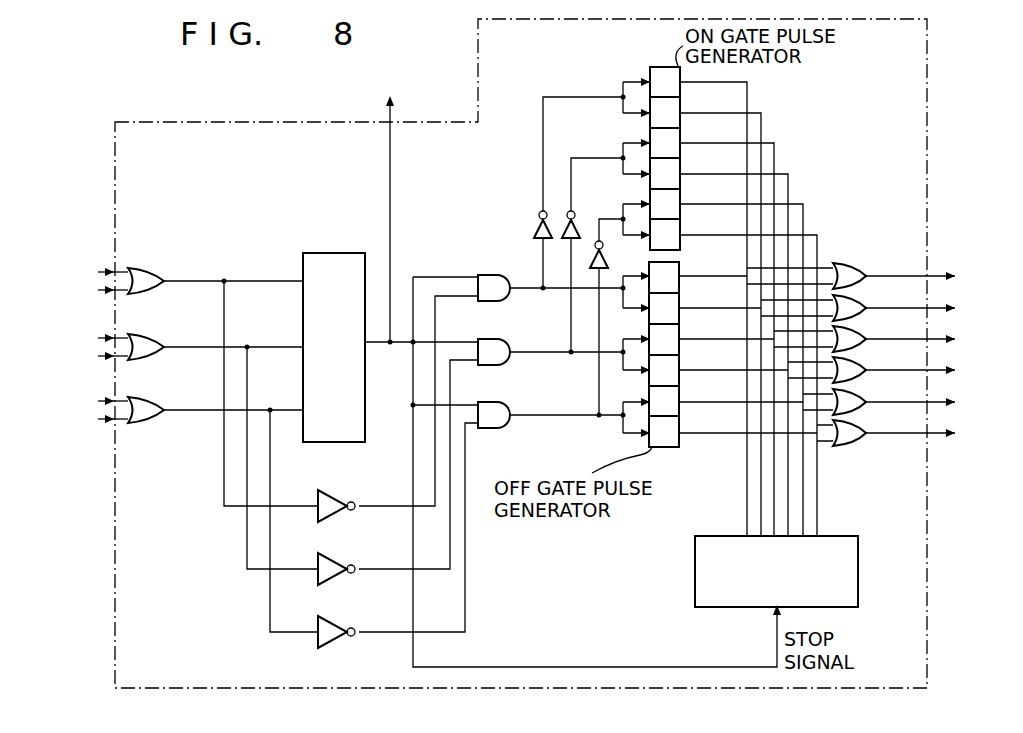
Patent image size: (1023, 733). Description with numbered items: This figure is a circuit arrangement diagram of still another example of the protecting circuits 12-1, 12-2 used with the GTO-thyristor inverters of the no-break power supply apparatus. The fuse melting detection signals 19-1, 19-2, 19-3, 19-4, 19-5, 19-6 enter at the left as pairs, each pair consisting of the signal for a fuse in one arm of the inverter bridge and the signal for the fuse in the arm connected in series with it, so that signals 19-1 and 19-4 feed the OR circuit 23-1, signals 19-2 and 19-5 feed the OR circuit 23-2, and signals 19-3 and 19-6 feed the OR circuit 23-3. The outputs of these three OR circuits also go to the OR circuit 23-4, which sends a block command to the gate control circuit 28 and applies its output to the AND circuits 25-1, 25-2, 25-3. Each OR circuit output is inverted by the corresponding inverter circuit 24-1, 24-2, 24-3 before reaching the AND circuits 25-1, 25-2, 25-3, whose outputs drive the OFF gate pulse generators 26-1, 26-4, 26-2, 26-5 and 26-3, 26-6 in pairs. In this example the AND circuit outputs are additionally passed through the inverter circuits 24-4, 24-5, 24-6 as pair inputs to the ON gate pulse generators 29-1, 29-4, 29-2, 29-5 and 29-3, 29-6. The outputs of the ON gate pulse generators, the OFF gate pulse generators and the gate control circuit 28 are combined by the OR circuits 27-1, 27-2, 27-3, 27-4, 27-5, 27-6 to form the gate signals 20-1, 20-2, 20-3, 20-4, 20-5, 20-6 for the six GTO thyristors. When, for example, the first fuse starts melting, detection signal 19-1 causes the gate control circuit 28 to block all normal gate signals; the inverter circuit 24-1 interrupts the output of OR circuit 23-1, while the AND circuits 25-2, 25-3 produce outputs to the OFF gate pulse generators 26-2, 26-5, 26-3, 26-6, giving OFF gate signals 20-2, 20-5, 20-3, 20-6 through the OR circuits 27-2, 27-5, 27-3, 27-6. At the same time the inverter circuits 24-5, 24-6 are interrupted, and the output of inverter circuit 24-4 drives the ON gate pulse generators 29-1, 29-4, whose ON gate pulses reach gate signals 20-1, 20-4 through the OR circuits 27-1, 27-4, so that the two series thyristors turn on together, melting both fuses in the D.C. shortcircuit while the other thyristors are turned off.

The protecting circuit 12-1 is at (483, 353).
The protecting circuit 12-2 is at (113, 584).
The fuse melting detection signal 19-1 is at (80, 271).
The fuse melting detection signal 19-2 is at (80, 337).
The fuse melting detection signal 19-3 is at (80, 400).
The fuse melting detection signal 19-4 is at (80, 290).
The fuse melting detection signal 19-5 is at (80, 355).
The fuse melting detection signal 19-6 is at (80, 418).
The gate signal 20-1 is at (936, 276).
The gate signal 20-2 is at (936, 339).
The gate signal 20-3 is at (936, 402).
The gate signal 20-4 is at (936, 308).
The gate signal 20-5 is at (936, 370).
The gate signal 20-6 is at (936, 433).
The OR circuit 23-1 is at (150, 270).
The OR circuit 23-2 is at (148, 339).
The OR circuit 23-3 is at (148, 400).
The OR circuit 23-4 is at (336, 248).
The inverter circuit 24-1 is at (336, 498).
The inverter circuit 24-2 is at (336, 562).
The inverter circuit 24-3 is at (336, 623).
The inverter circuit 24-4 is at (539, 230).
The inverter circuit 24-5 is at (565, 226).
The inverter circuit 24-6 is at (594, 250).
The AND circuit 25-1 is at (500, 302).
The AND circuit 25-2 is at (500, 366).
The AND circuit 25-3 is at (502, 429).
The OFF gate pulse generator 26-1 is at (680, 282).
The OFF gate pulse generator 26-2 is at (680, 345).
The OFF gate pulse generator 26-3 is at (680, 407).
The OFF gate pulse generator 26-4 is at (680, 314).
The OFF gate pulse generator 26-5 is at (680, 377).
The OFF gate pulse generator 26-6 is at (680, 446).
The OR circuit 27-1 is at (861, 268).
The OR circuit 27-2 is at (861, 333).
The OR circuit 27-3 is at (861, 397).
The OR circuit 27-4 is at (861, 302).
The OR circuit 27-5 is at (861, 365).
The OR circuit 27-6 is at (861, 428).
The gate control circuit 28 is at (858, 592).
The ON gate pulse generator 29-1 is at (681, 87).
The ON gate pulse generator 29-2 is at (681, 148).
The ON gate pulse generator 29-3 is at (681, 209).
The ON gate pulse generator 29-4 is at (681, 118).
The ON gate pulse generator 29-5 is at (681, 179).
The ON gate pulse generator 29-6 is at (681, 240).